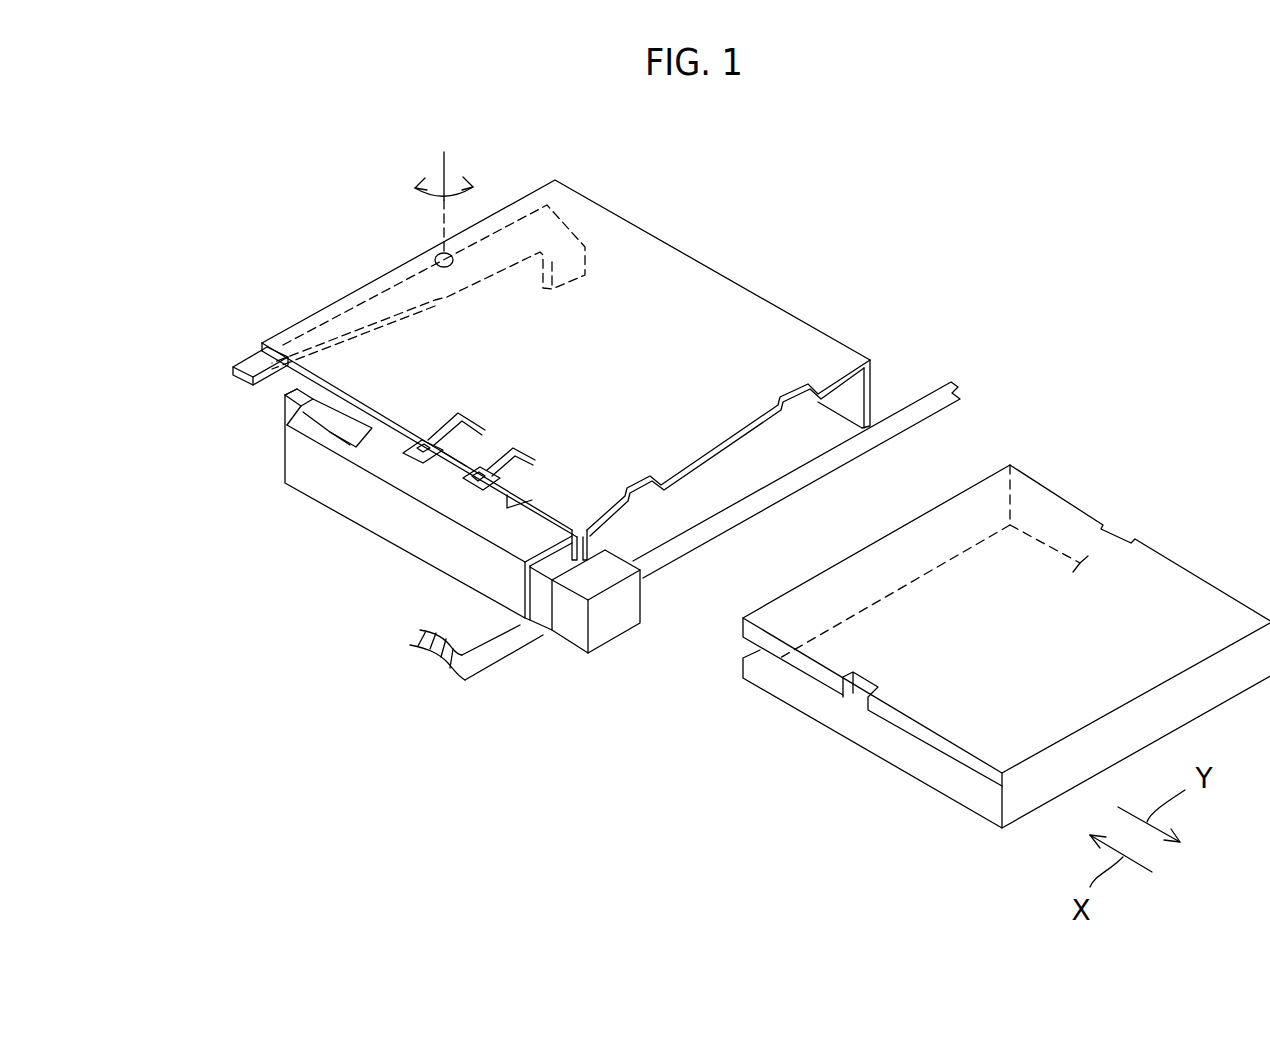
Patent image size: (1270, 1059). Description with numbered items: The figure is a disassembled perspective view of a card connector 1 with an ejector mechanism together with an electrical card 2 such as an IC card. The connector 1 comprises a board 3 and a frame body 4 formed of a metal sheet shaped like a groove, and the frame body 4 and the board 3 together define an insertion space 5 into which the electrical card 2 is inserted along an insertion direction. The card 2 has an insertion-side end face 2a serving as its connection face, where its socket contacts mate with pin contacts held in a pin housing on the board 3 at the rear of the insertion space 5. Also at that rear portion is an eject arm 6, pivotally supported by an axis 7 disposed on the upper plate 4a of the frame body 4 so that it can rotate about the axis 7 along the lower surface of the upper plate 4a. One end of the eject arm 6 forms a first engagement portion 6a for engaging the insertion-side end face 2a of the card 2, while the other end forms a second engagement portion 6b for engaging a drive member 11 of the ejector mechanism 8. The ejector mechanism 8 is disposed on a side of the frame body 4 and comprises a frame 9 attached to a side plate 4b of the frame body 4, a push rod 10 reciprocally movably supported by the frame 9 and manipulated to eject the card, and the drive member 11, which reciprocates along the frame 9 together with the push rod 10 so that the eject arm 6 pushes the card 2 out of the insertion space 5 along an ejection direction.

The card connector 1 is at (803, 240).
The electrical card 2 is at (1153, 582).
The insertion-side end face 2a is at (926, 536).
The board 3 is at (893, 333).
The frame body 4 is at (667, 310).
The upper plate 4a is at (740, 312).
The side plate 4b is at (855, 392).
The insertion space 5 is at (715, 484).
The eject arm 6 is at (367, 290).
The first engagement portion 6a is at (583, 262).
The second engagement portion 6b is at (252, 363).
The axis 7 is at (445, 172).
The ejector mechanism 8 is at (403, 525).
The frame 9 is at (440, 553).
The push rod 10 is at (610, 623).
The drive member 11 is at (290, 410).